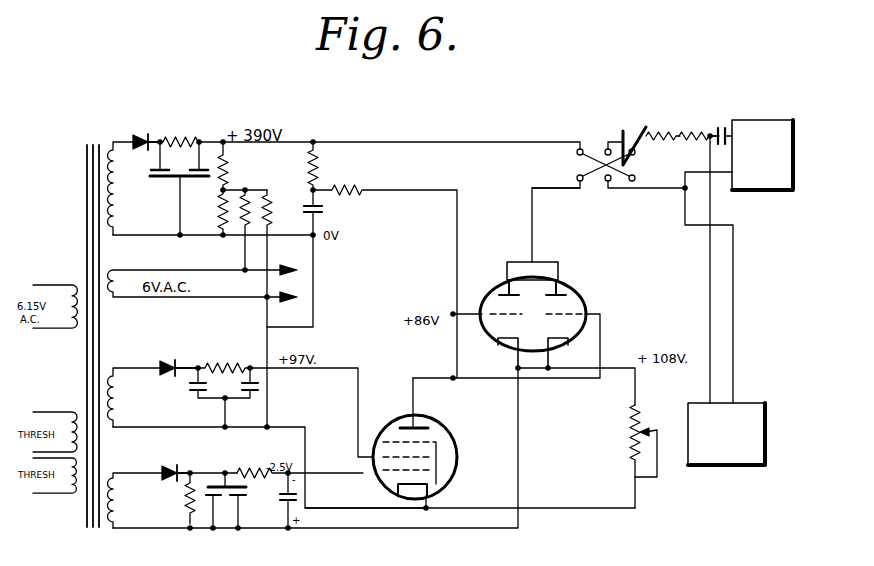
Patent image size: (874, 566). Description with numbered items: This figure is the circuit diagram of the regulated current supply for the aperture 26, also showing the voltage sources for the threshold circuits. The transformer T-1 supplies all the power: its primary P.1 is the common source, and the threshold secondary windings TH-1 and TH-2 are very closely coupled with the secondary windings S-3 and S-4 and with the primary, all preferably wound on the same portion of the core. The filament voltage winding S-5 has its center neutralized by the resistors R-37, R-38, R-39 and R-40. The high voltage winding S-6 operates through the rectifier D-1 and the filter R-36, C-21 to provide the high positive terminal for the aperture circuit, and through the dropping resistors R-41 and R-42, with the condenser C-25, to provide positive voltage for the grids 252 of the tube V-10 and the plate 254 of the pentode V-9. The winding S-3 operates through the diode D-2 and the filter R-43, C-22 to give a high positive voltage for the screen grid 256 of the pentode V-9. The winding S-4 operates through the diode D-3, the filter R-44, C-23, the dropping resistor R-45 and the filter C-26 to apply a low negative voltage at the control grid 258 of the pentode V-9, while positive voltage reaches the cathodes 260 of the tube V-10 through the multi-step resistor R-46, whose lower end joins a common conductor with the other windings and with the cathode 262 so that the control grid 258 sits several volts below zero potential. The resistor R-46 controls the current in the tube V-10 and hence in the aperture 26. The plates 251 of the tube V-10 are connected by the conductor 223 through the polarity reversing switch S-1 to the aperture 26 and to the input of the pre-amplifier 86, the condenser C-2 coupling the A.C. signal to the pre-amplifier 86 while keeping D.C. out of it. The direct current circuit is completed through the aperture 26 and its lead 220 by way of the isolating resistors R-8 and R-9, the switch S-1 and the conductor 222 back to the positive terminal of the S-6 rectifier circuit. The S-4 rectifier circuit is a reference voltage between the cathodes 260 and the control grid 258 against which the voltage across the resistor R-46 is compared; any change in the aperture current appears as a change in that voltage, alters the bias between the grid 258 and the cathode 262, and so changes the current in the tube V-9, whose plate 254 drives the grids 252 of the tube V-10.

The transformer T-1 is at (88, 145).
The high voltage winding S-6 is at (121, 180).
The rectifier D-1 is at (142, 137).
The filter resistor R-36 is at (182, 137).
The filter condenser C-21 is at (176, 182).
The neutralizing resistor R-37 is at (220, 179).
The neutralizing resistor R-38 is at (217, 218).
The neutralizing resistor R-39 is at (252, 195).
The neutralizing resistor R-40 is at (280, 202).
The dropping resistor R-41 is at (317, 166).
The condenser C-25 is at (325, 211).
The dropping resistor R-42 is at (347, 187).
The filament voltage winding S-5 is at (118, 272).
The transformer primary P.1 is at (71, 281).
The threshold secondary winding TH-1 is at (70, 412).
The threshold secondary winding TH-2 is at (70, 494).
The secondary winding S-3 is at (126, 392).
The diode D-2 is at (180, 353).
The filter resistor R-43 is at (222, 365).
The filter condenser C-22 is at (240, 386).
The secondary winding S-4 is at (126, 490).
The diode D-3 is at (150, 474).
The dropping resistor R-45 is at (263, 454).
The filter resistor R-44 is at (185, 518).
The filter condenser C-23 is at (230, 493).
The filter condenser C-26 is at (282, 507).
The pentode V-9 is at (412, 416).
The plate 254 is at (440, 428).
The screen grid 256 is at (372, 455).
The control grid 258 is at (365, 498).
The cathode 262 is at (429, 503).
The tube V-10 is at (575, 285).
The plates 251 is at (522, 262).
The grids 252 is at (468, 312).
The cathodes 260 is at (512, 345).
The multi-step resistor R-46 is at (630, 447).
The polarity reversing switch S-1 is at (593, 148).
The conductor 223 is at (563, 191).
The conductor 222 is at (563, 138).
The isolating resistor R-9 is at (654, 137).
The isolating resistor R-8 is at (692, 135).
The condenser C-2 is at (723, 132).
The pre-amplifier 86 is at (773, 192).
The conductor 220 is at (716, 287).
The aperture 26 is at (742, 467).